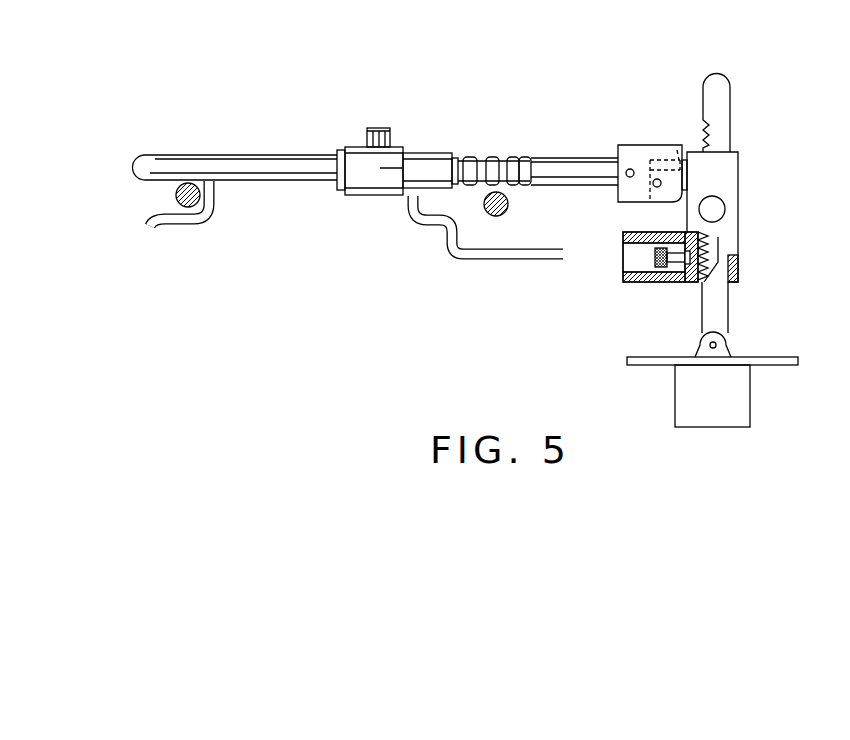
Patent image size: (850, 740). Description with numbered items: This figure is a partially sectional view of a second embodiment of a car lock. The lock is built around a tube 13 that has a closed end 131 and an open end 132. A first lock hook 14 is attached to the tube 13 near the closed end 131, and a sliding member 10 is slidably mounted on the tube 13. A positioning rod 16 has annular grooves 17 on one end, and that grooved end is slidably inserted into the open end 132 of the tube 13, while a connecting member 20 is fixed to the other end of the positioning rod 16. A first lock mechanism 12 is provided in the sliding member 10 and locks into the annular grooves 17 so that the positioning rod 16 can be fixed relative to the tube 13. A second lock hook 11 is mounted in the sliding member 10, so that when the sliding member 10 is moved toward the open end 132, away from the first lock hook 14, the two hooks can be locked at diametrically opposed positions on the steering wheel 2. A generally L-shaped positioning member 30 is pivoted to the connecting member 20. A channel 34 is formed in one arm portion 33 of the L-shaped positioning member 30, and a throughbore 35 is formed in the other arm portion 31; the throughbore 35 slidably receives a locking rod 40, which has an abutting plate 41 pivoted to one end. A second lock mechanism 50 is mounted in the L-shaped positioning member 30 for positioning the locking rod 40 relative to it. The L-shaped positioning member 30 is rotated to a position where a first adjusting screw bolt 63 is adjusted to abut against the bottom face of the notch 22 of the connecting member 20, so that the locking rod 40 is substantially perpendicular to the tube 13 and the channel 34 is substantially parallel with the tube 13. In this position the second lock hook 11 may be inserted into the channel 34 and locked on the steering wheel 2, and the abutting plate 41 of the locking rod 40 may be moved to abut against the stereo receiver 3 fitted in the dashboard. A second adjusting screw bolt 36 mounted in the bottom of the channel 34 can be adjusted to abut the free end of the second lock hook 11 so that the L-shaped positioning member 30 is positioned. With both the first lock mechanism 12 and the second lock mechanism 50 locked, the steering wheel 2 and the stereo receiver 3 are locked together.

The closed end 131 is at (131, 165).
The tube 13 is at (281, 182).
The steering wheel 2 is at (175, 196).
The first lock hook 14 is at (200, 226).
The sliding member 10 is at (386, 197).
The first lock mechanism 12 is at (383, 128).
The open end 132 is at (455, 153).
The annular grooves 17 is at (491, 160).
The positioning rod 16 is at (571, 160).
The second lock hook 11 is at (471, 262).
The connecting member 20 is at (630, 142).
The notch 22 is at (656, 146).
The first adjusting screw bolt 63 is at (677, 150).
The other arm portion 31 is at (735, 150).
The L-shaped positioning member 30 is at (738, 190).
The second lock mechanism 50 is at (718, 210).
The one arm portion 33 is at (636, 236).
The channel 34 is at (628, 256).
The second adjusting screw bolt 36 is at (656, 268).
The throughbore 35 is at (738, 262).
The locking rod 40 is at (728, 315).
The abutting plate 41 is at (798, 359).
The stereo receiver 3 is at (738, 408).